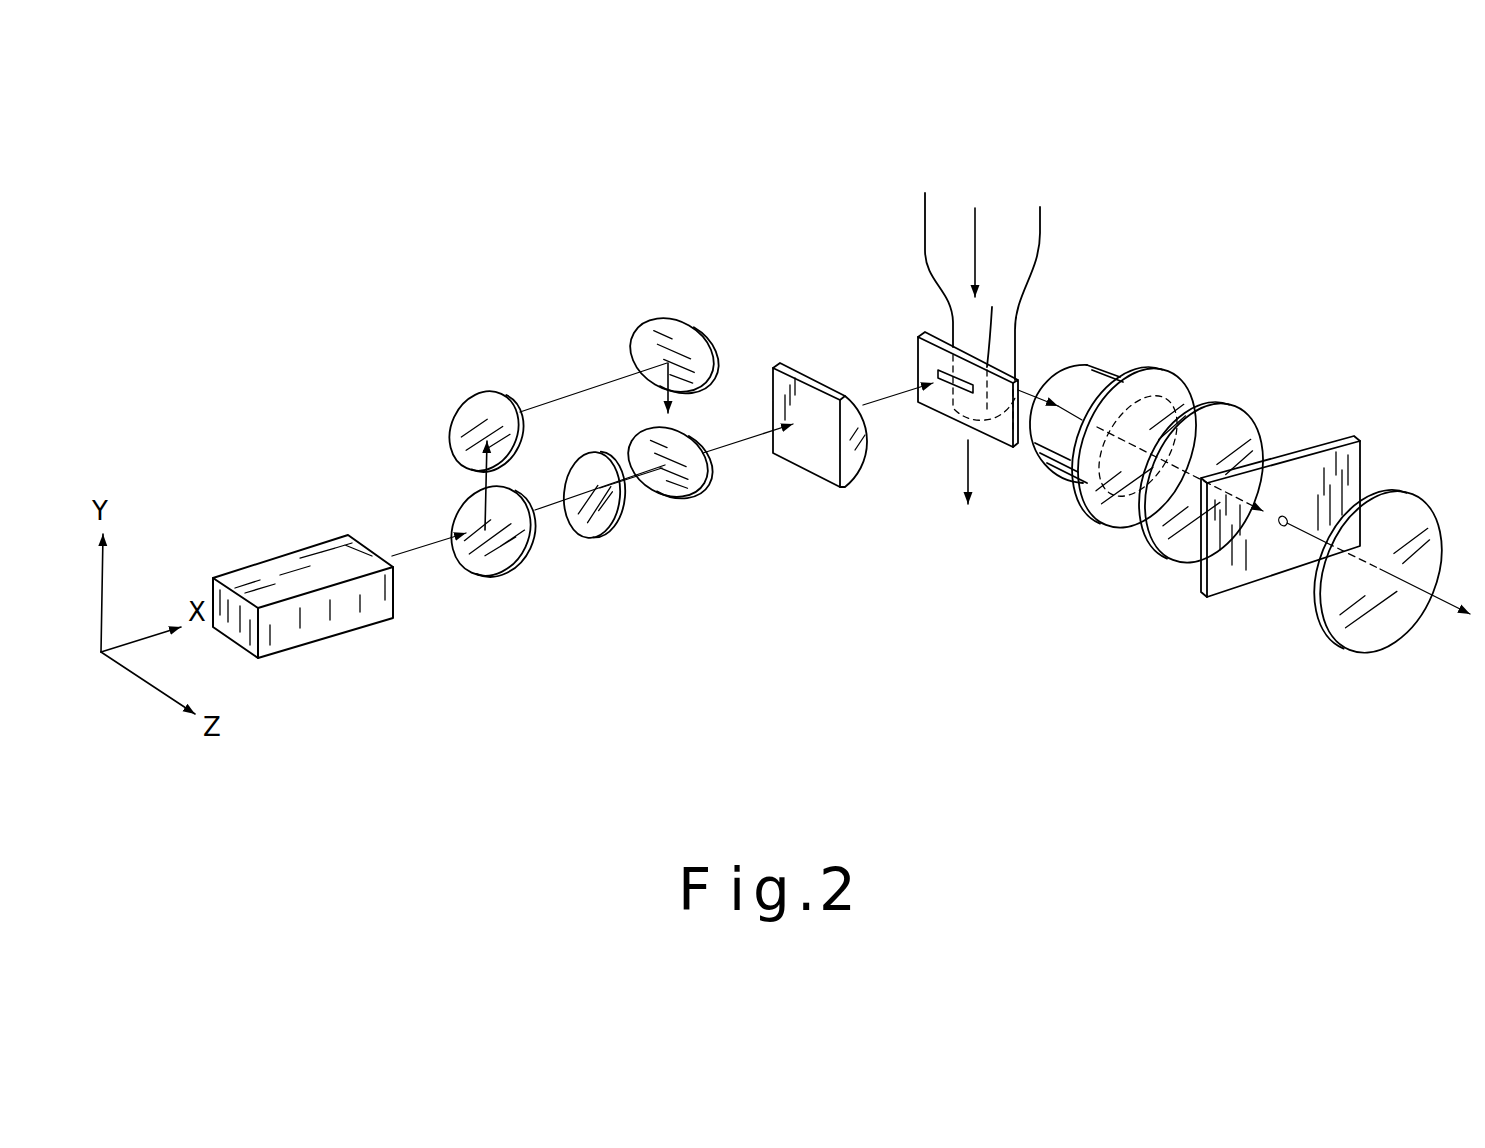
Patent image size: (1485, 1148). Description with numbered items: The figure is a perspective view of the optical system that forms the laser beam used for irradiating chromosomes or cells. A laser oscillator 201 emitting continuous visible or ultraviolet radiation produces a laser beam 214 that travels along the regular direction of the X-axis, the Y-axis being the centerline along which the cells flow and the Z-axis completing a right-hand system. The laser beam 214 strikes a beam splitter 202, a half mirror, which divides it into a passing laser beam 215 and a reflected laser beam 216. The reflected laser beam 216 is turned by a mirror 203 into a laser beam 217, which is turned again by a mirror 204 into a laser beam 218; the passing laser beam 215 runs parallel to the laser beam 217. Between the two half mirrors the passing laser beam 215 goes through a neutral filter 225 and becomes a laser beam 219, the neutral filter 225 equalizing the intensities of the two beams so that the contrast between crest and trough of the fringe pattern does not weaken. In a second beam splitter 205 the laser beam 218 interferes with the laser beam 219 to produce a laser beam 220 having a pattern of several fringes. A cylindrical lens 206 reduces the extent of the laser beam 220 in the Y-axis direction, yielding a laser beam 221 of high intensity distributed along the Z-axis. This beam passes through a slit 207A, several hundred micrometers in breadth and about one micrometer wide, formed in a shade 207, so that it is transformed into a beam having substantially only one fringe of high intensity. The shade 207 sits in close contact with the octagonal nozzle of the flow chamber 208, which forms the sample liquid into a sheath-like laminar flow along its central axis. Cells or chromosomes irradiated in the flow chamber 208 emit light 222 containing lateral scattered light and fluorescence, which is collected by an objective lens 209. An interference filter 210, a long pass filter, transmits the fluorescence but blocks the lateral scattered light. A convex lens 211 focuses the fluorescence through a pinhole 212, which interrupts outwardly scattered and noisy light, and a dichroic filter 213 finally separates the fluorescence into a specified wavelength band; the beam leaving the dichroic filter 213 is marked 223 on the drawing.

The laser oscillator 201 is at (327, 630).
The beam splitter (half mirror) 202 is at (497, 557).
The mirror 203 is at (473, 408).
The mirror 204 is at (652, 320).
The beam splitter (half mirror) 205 is at (687, 493).
The cylindrical lens 206 is at (827, 473).
The shade 207 is at (937, 403).
The slit 207A is at (962, 390).
The flow chamber 208 is at (1002, 238).
The objective lens 209 is at (1057, 462).
The interference filter 210 is at (1172, 375).
The convex lens 211 is at (1160, 547).
The pinhole 212 is at (1335, 440).
The dichroic filter 213 is at (1332, 633).
The laser beam 214 is at (428, 547).
The passing laser beam 215 is at (552, 510).
The reflected laser beam 216 is at (485, 482).
The laser beam 217 is at (570, 388).
The laser beam 218 is at (672, 397).
The laser beam 219 is at (628, 488).
The laser beam 220 is at (740, 448).
The laser beam 221 is at (878, 405).
The light 222 is at (1032, 390).
The output beam 223 is at (1443, 603).
The neutral filter 225 is at (598, 528).